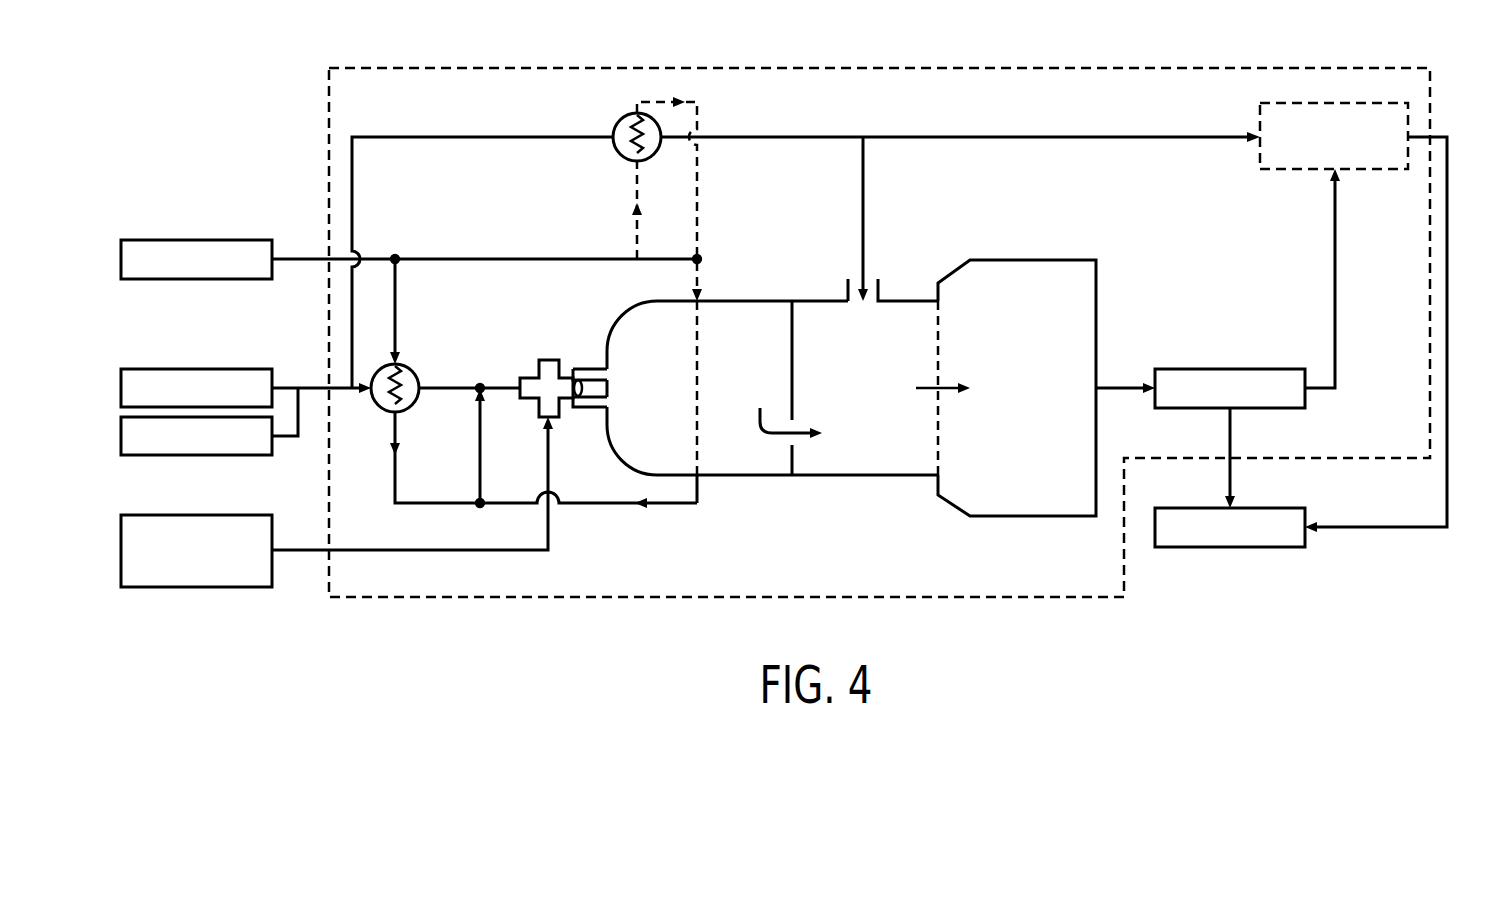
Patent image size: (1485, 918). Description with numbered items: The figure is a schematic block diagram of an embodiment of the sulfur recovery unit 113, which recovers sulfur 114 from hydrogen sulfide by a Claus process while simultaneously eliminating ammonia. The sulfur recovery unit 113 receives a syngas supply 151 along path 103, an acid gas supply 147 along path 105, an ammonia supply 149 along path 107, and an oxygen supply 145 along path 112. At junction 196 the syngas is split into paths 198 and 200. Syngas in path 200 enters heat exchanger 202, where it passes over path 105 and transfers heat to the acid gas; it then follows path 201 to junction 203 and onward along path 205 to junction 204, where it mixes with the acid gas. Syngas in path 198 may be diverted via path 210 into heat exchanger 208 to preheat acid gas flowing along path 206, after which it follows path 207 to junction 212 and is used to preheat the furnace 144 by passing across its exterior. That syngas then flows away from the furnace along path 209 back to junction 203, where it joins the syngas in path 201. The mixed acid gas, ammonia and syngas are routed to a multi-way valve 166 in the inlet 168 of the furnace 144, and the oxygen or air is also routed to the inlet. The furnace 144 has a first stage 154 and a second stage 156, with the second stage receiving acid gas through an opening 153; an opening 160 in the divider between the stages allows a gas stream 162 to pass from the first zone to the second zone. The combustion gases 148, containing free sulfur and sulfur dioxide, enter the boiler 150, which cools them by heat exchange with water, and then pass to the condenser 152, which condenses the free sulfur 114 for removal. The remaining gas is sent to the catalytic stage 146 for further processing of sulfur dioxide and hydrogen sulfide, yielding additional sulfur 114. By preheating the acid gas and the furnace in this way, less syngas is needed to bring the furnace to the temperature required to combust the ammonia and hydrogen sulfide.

The sulfur recovery unit 113 is at (600, 67).
The syngas supply 151 is at (196, 240).
The path 103 is at (299, 259).
The path 198 is at (484, 258).
The junction 196 is at (397, 257).
The path 200 is at (398, 306).
The heat exchanger 202 is at (410, 407).
The path 105 is at (289, 388).
The acid gas supply 147 is at (196, 369).
The ammonia supply 149 is at (192, 456).
The path 107 is at (290, 438).
The oxygen supply 145 is at (194, 515).
The path 112 is at (299, 550).
The path 206 is at (577, 139).
The heat exchanger 208 is at (620, 121).
The path 210 is at (636, 235).
The path 207 is at (701, 195).
The junction 212 is at (703, 258).
The junction 204 is at (483, 385).
The path 205 is at (482, 427).
The path 201 is at (393, 486).
The junction 203 is at (478, 507).
The path 209 is at (600, 505).
The furnace 144 is at (763, 479).
The multi-way valve 166 is at (548, 360).
The inlet 168 is at (591, 409).
The first stage 154 is at (727, 348).
The second stage 156 is at (879, 348).
The opening 160 is at (790, 444).
The gas stream 162 is at (804, 426).
The opening 153 is at (881, 290).
The boiler 150 is at (1002, 317).
The gases 148 is at (1120, 385).
The condenser 152 is at (1228, 369).
The catalytic stage 146 is at (1305, 103).
The sulfur 114 is at (1228, 548).